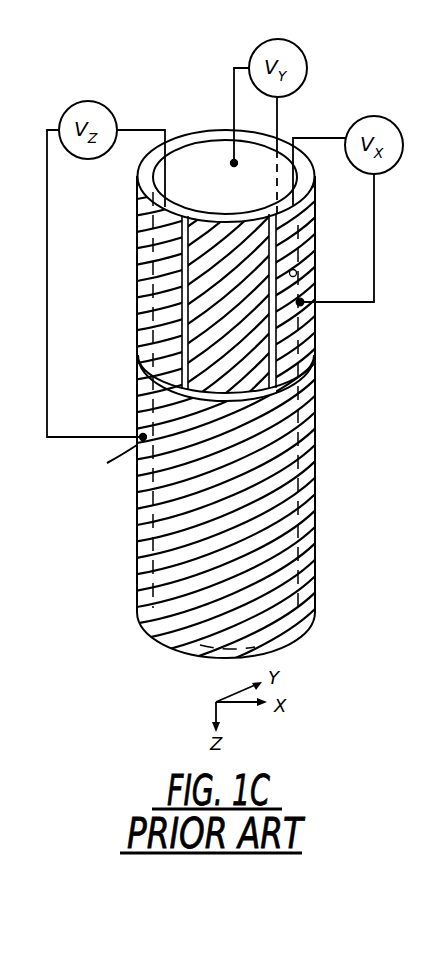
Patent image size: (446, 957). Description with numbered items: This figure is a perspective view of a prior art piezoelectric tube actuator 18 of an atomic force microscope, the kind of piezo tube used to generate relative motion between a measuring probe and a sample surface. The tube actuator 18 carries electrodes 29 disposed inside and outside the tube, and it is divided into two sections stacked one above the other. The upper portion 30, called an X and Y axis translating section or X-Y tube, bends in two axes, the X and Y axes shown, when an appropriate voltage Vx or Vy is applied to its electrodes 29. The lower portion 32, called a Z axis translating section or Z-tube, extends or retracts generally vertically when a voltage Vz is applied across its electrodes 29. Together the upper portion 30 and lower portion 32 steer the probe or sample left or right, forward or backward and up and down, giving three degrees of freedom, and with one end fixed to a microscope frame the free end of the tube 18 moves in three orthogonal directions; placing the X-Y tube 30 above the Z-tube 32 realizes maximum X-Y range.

The piezoelectric tube actuator 18 is at (220, 399).
The electrodes 29 is at (232, 162).
The upper portion 30 is at (182, 140).
The lower portion 32 is at (313, 520).